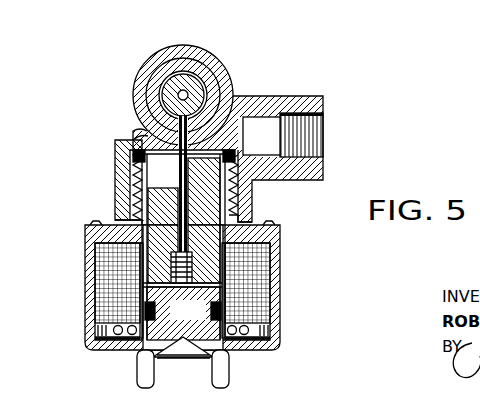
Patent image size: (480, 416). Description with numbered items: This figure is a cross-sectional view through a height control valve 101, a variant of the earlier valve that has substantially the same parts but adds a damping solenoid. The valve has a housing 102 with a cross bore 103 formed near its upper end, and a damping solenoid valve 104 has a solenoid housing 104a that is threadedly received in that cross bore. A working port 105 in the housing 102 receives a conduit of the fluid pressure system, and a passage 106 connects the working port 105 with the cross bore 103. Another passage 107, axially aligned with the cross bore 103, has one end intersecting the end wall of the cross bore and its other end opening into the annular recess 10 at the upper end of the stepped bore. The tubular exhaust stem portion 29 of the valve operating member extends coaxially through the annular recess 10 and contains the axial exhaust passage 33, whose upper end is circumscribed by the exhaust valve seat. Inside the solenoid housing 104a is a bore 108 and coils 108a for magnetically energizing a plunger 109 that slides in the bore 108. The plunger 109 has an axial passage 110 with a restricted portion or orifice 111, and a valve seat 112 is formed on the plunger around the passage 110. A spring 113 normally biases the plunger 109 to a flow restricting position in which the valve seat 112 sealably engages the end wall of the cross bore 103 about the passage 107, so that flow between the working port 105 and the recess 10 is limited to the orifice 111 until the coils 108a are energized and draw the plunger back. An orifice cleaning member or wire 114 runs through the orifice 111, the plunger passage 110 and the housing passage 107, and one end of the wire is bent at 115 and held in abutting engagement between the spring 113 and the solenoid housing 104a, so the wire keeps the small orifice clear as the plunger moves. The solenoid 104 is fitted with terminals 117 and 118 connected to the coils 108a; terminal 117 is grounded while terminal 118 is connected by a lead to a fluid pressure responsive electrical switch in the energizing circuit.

The height control valve 101 is at (130, 66).
The annular recess 10 is at (225, 80).
The tubular exhaust stem portion 29 is at (178, 82).
The axial exhaust passage 33 is at (197, 88).
The housing 102 is at (140, 97).
The passage 107 is at (142, 128).
The working port 105 is at (320, 118).
The passage 106 is at (235, 130).
The cross bore 103 is at (120, 168).
The plunger 109 is at (120, 195).
The axial passage 110 is at (120, 210).
The valve seat 112 is at (184, 245).
The restricted portion or orifice 111 is at (235, 192).
The orifice cleaning member or wire 114 is at (185, 218).
The spring 113 is at (168, 258).
The bent end 115 is at (183, 335).
The damping solenoid valve 104 is at (90, 258).
The solenoid housing 104a is at (90, 288).
The bore 108 is at (270, 265).
The coils 108a is at (260, 303).
The terminal 117 is at (100, 340).
The terminal 118 is at (243, 340).